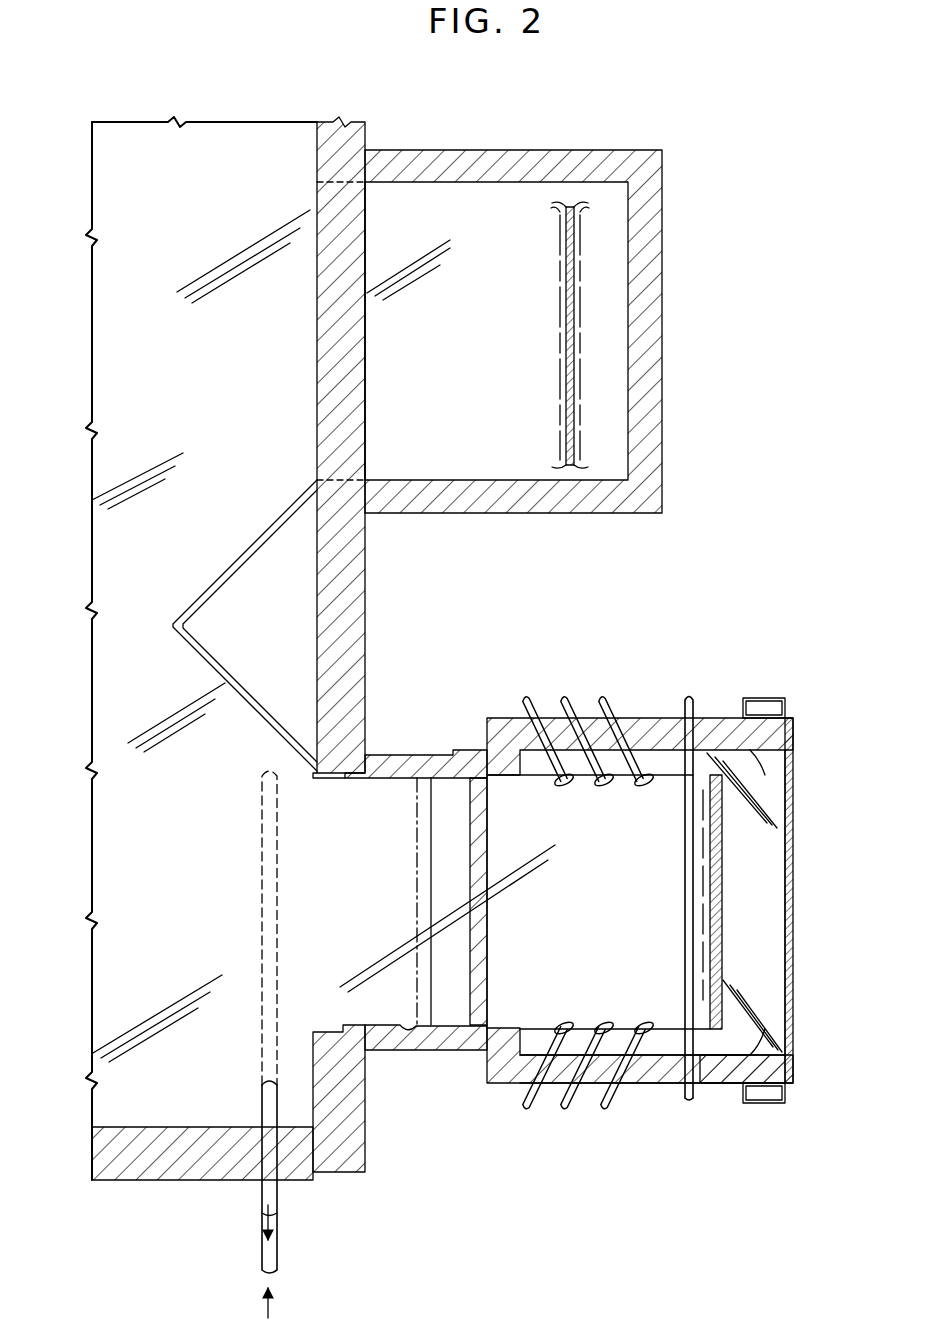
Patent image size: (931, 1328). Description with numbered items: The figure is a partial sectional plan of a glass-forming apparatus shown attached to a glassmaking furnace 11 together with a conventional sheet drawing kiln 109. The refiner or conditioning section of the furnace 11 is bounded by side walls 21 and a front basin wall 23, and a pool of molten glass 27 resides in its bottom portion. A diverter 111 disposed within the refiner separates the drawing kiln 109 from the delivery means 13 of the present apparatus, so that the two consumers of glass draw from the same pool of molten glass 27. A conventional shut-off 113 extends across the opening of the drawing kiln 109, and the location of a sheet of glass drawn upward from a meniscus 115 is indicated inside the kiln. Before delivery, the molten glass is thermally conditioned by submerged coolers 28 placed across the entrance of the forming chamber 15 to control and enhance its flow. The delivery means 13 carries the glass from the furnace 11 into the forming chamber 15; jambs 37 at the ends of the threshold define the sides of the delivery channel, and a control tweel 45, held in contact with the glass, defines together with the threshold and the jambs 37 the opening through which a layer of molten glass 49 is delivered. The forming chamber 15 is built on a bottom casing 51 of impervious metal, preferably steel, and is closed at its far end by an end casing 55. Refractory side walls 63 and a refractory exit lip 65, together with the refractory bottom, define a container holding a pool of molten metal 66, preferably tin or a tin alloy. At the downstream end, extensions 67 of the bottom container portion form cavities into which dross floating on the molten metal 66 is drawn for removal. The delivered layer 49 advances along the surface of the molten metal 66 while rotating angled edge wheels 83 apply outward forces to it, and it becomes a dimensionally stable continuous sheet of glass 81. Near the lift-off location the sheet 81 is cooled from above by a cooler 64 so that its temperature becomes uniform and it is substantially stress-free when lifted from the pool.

The furnace 11 is at (225, 102).
The sheet drawing kiln 109 is at (505, 136).
The shut-off 113 is at (365, 320).
The meniscus 115 is at (570, 339).
The diverter 111 is at (194, 649).
The front basin wall 23 is at (365, 668).
The jambs 37 is at (425, 755).
The pool of molten glass 27 is at (185, 938).
The submerged coolers 28 is at (262, 1105).
The side walls 21 is at (198, 1180).
The delivery means 13 is at (434, 1095).
The layer of molten glass 49 is at (468, 963).
The control tweel 45 is at (488, 911).
The forming chamber 15 is at (645, 690).
The end casing 55 is at (795, 858).
The refractory exit lip 65 is at (793, 936).
The pool of molten metal 66 is at (768, 914).
The continuous sheet of glass 81 is at (650, 914).
The cooler 64 is at (694, 700).
The extensions 67 is at (768, 698).
The angled edge wheels 83 is at (645, 788).
The bottom casing 51 is at (653, 1083).
The refractory side walls 63 is at (711, 1068).